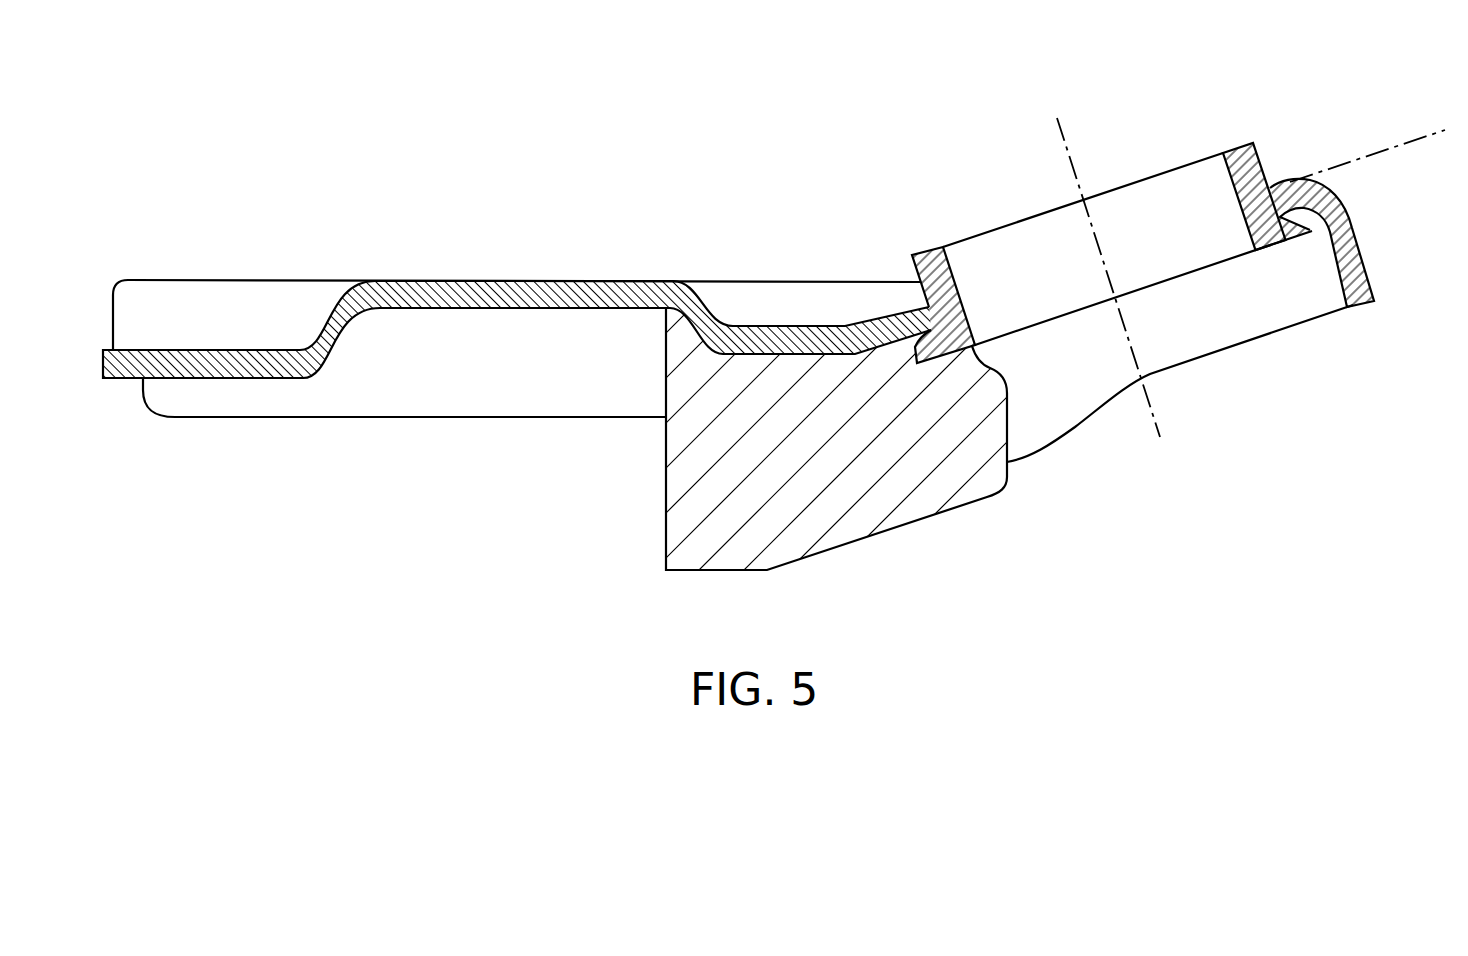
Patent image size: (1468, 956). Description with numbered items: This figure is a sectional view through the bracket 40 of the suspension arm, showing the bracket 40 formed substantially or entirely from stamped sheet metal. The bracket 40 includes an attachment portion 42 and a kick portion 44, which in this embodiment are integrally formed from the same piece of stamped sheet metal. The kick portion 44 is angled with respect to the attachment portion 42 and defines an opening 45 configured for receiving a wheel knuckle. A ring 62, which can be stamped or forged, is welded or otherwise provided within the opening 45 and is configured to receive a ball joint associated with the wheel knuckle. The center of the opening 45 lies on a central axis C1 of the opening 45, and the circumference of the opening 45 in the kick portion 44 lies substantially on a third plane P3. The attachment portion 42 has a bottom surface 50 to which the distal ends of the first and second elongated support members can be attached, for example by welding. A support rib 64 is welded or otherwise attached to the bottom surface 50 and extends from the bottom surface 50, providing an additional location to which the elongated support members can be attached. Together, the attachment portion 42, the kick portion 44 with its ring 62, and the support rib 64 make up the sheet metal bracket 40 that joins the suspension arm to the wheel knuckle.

The bracket 40 is at (272, 178).
The attachment portion 42 is at (403, 263).
The kick portion 44 is at (919, 228).
The opening 45 is at (1273, 187).
The bottom surface 50 is at (218, 402).
The ring 62 is at (1242, 152).
The support rib 64 is at (882, 512).
The central axis C1 is at (1157, 420).
The third plane P3 is at (1390, 148).